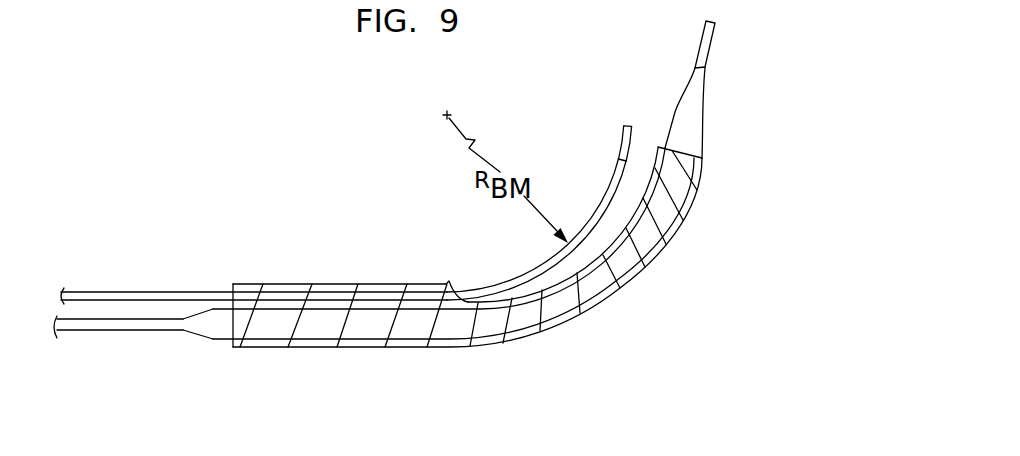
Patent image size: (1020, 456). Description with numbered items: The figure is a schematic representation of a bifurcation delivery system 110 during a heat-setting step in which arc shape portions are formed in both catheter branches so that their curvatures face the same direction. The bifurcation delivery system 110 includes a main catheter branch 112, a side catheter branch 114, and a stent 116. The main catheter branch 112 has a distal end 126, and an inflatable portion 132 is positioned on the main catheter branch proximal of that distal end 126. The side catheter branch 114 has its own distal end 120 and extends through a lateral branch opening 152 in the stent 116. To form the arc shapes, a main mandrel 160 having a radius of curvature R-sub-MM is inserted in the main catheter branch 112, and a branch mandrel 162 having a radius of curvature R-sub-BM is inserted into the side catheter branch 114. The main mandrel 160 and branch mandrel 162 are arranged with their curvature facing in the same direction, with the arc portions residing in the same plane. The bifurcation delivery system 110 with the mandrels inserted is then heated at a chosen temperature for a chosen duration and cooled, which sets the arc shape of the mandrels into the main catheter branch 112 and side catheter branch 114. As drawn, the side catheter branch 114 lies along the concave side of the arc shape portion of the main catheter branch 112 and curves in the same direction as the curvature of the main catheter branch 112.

The bifurcation delivery system 110 is at (273, 379).
The main catheter branch 112 is at (147, 346).
The side catheter branch 114 is at (146, 280).
The stent 116 is at (710, 195).
The distal end 120 is at (610, 182).
The distal end 126 is at (705, 74).
The inflatable portion 132 is at (220, 320).
The lateral branch opening 152 is at (455, 280).
The main mandrel 160 is at (710, 38).
The branch mandrel 162 is at (622, 135).